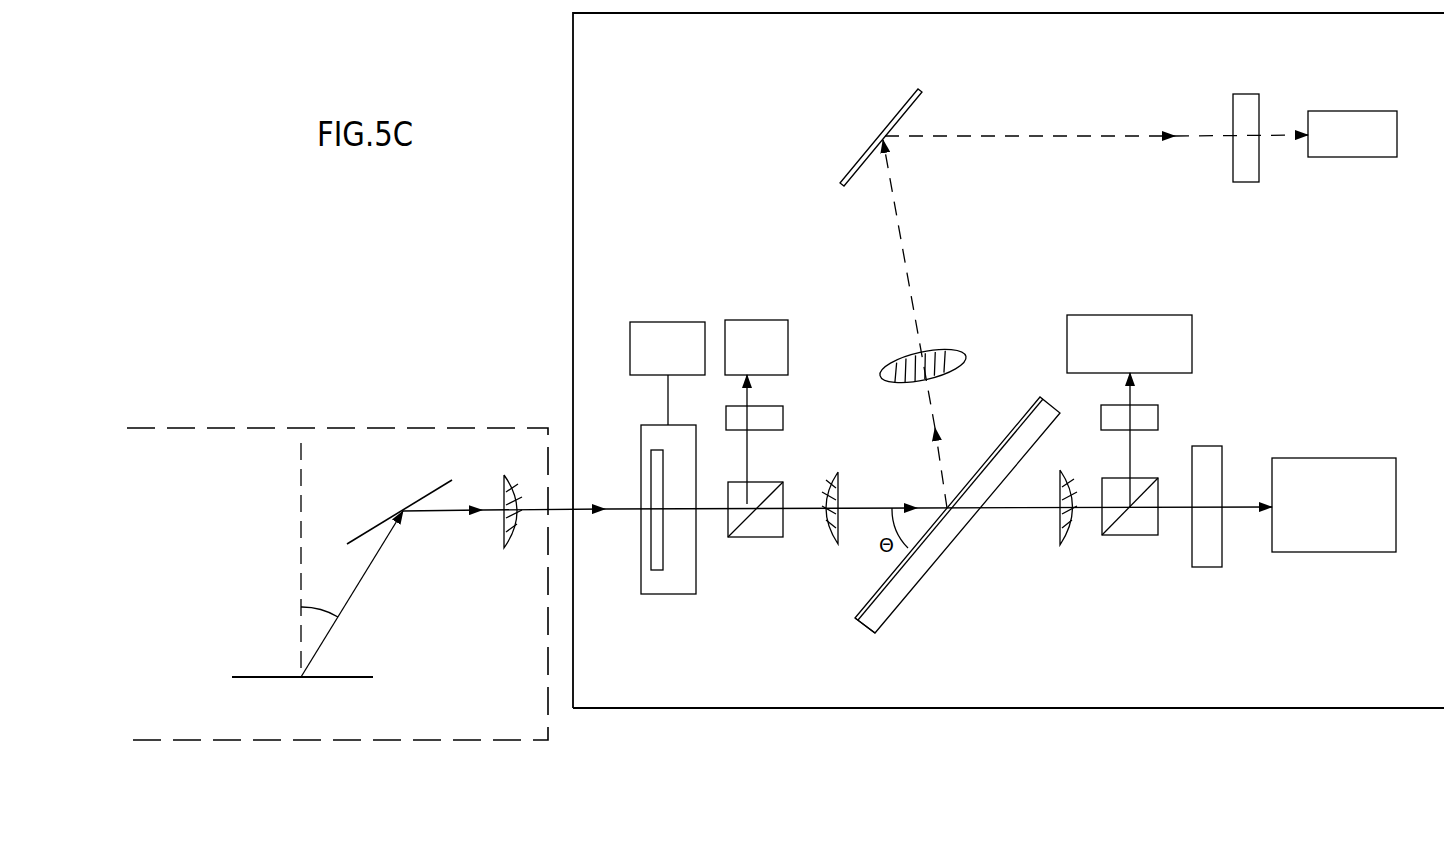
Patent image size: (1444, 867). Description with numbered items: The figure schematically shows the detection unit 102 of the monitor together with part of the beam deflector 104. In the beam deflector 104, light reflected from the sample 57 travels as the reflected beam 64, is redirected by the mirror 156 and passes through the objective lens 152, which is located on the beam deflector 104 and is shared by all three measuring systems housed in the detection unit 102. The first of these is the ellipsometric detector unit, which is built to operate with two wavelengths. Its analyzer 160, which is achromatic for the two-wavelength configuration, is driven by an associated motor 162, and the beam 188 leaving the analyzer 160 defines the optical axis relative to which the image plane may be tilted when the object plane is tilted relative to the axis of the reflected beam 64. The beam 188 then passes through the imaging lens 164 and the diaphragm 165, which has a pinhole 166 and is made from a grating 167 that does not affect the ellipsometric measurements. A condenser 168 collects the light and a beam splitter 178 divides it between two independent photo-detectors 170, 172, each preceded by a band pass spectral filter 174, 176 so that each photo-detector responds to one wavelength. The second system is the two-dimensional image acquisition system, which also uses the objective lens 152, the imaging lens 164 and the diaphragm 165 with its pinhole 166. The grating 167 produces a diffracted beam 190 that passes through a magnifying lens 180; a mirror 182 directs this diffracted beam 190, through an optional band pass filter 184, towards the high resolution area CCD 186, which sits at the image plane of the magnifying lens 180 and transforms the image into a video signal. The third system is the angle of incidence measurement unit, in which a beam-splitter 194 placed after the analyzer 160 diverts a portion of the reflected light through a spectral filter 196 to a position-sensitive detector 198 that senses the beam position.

The sample 57 is at (255, 677).
The reflected beam 64 is at (347, 607).
The detection unit 102 is at (1312, 700).
The beam deflector 104 is at (293, 427).
The objective lens 152 is at (510, 475).
The mirror 156 is at (373, 522).
The analyzer 160 is at (682, 594).
The motor 162 is at (680, 322).
The imaging lens 164 is at (826, 530).
The diaphragm 165 is at (923, 538).
The pinhole 166 is at (918, 522).
The grating 167 is at (855, 618).
The condenser 168 is at (1053, 525).
The photo-detector 170 is at (1192, 345).
The photo-detector 172 is at (1328, 552).
The band pass spectral filter 174 is at (1158, 415).
The band pass spectral filter 176 is at (1212, 567).
The beam splitter 178 is at (1135, 528).
The magnifying lens 180 is at (948, 352).
The mirror 182 is at (858, 157).
The band pass filter 184 is at (1233, 108).
The CCD 186 is at (1340, 111).
The beam 188 is at (887, 507).
The diffracted beam 190 is at (940, 453).
The beam-splitter 194 is at (750, 537).
The spectral filter 196 is at (783, 415).
The position-sensitive detector 198 is at (746, 320).